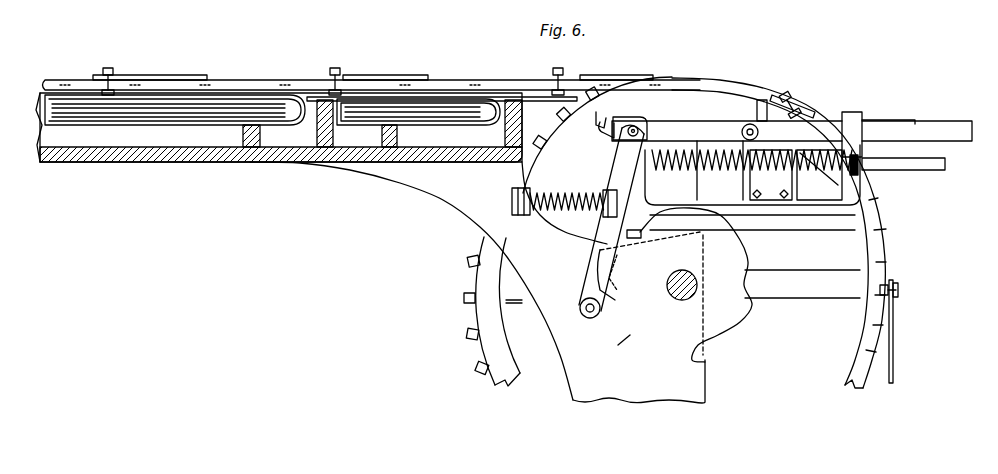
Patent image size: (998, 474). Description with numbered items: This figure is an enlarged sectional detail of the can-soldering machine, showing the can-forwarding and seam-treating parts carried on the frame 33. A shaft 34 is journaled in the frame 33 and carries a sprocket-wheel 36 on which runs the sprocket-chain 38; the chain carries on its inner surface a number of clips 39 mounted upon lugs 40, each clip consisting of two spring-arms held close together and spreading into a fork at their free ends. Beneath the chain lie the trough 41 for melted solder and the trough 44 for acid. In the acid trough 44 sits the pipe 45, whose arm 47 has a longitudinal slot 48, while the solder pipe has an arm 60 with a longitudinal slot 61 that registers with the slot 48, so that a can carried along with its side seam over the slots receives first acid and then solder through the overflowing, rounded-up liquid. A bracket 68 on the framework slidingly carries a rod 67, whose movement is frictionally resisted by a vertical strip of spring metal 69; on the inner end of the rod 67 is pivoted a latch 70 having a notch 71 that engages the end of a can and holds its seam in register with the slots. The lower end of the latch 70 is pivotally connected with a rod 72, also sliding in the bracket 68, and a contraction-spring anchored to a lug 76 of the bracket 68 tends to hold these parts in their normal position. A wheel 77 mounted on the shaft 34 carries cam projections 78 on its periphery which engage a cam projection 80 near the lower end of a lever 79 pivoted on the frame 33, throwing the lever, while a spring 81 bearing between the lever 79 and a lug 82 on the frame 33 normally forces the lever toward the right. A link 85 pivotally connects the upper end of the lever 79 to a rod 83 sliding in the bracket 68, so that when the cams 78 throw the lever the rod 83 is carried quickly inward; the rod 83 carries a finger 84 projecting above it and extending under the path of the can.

The frame 33 is at (675, 240).
The shaft 34 is at (700, 280).
The sprocket-wheel 36 is at (858, 246).
The sprocket-chain 38 is at (227, 84).
The clips 39 is at (177, 78).
The lugs 40 is at (105, 80).
The trough 41 is at (153, 150).
The trough 44 is at (440, 150).
The pipe 45 is at (780, 156).
The arm 47 is at (462, 106).
The longitudinal slot 48 is at (433, 94).
The arm 60 is at (185, 112).
The longitudinal slot 61 is at (210, 93).
The rod 67 is at (878, 120).
The bracket 68 is at (688, 195).
The vertical strip of spring metal 69 is at (771, 175).
The latch 70 is at (640, 116).
The notch 71 is at (604, 118).
The rod 72 is at (925, 166).
The lug 76 is at (858, 168).
The wheel 77 is at (668, 285).
The cam projections 78 is at (642, 242).
The lever 79 is at (606, 252).
The cam projection 80 is at (617, 277).
The spring 81 is at (570, 186).
The lug 82 is at (510, 195).
The rod 83 is at (930, 128).
The finger 84 is at (764, 110).
The link 85 is at (708, 118).